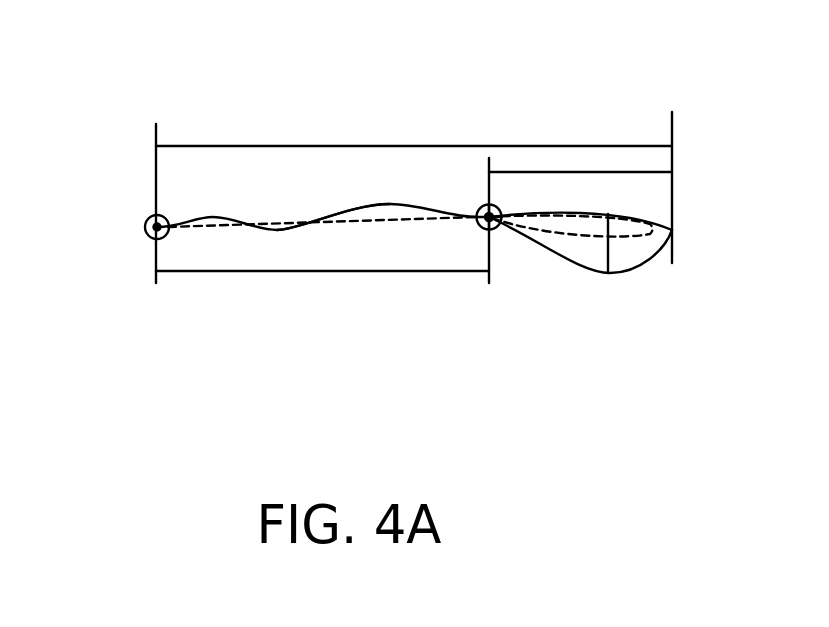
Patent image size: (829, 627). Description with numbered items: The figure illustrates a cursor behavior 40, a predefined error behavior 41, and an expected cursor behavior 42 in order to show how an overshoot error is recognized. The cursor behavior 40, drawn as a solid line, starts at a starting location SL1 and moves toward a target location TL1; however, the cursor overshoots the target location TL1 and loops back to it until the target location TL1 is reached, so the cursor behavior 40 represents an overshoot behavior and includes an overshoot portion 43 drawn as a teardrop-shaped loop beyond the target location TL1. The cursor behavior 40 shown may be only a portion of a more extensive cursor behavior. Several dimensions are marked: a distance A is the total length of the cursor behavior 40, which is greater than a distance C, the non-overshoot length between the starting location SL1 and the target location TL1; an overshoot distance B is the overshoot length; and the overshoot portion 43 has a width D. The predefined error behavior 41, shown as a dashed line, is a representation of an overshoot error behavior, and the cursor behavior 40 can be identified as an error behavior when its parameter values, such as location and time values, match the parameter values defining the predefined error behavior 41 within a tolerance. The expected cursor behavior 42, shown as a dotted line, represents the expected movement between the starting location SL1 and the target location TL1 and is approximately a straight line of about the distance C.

The cursor behavior 40 is at (363, 210).
The predefined error behavior 41 is at (297, 220).
The expected cursor behavior 42 is at (350, 219).
The overshoot portion 43 is at (654, 282).
The distance A is at (358, 145).
The overshoot distance B is at (558, 172).
The distance C is at (302, 272).
The width D is at (613, 257).
The starting location SL1 is at (137, 223).
The target location TL1 is at (500, 233).